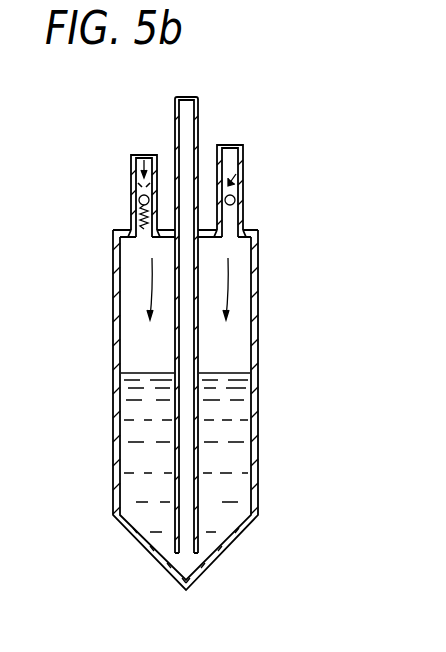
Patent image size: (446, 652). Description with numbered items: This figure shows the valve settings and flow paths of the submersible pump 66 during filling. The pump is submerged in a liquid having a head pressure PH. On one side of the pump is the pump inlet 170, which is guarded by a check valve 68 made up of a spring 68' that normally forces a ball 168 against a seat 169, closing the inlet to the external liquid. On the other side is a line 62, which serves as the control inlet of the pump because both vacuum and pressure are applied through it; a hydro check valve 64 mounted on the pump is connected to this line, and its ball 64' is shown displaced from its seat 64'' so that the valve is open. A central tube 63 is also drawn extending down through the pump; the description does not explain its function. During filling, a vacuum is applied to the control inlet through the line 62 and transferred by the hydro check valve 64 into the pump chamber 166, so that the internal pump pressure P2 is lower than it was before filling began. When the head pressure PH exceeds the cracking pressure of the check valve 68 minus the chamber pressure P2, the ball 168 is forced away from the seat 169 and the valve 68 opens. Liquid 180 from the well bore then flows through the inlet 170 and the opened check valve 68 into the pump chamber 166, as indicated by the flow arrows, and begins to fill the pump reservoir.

The submersible pump 66 is at (115, 430).
The pump chamber 166 is at (127, 325).
The internal pump pressure P2 is at (225, 322).
The liquid 180 is at (236, 426).
The central tube 63 is at (198, 118).
The check valve 68 is at (97, 200).
The pump inlet 170 is at (131, 160).
The seat 169 is at (136, 183).
The ball 168 is at (139, 202).
The spring 68' is at (91, 255).
The line 62 is at (243, 160).
The seat 64'' is at (286, 174).
The ball 64' is at (281, 202).
The hydro check valve 64 is at (280, 239).
The head pressure PH is at (136, 100).